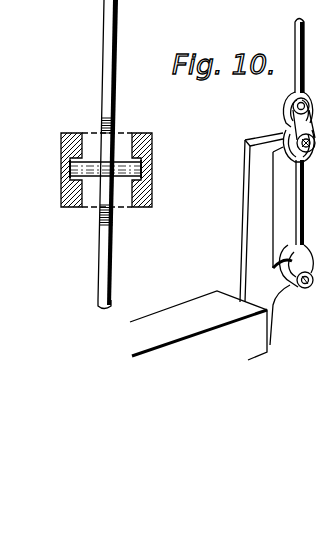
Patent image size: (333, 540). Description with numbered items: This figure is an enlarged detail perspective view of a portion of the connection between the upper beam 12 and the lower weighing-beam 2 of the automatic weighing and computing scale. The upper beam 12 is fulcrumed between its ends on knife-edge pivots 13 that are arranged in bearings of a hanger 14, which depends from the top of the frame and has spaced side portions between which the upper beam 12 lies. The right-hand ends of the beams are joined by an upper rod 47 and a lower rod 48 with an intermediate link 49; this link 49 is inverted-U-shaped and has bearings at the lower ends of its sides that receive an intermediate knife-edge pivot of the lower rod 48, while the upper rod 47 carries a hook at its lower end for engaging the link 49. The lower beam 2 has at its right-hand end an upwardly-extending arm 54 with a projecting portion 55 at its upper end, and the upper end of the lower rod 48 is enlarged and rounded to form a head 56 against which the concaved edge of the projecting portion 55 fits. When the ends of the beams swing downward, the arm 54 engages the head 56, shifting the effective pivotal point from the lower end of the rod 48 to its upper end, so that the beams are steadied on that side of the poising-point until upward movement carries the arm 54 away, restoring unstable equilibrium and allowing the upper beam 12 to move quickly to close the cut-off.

The lower weighing-beam 2 is at (158, 312).
The upper beam 12 is at (103, 70).
The knife-edge pivots 13 is at (68, 165).
The hanger 14 is at (73, 137).
The upper rod 47 is at (300, 79).
The lower rod 48 is at (300, 204).
The intermediate link 49 is at (284, 117).
The upwardly-extending arm 54 is at (257, 227).
The projecting portion 55 is at (283, 136).
The head 56 is at (285, 143).